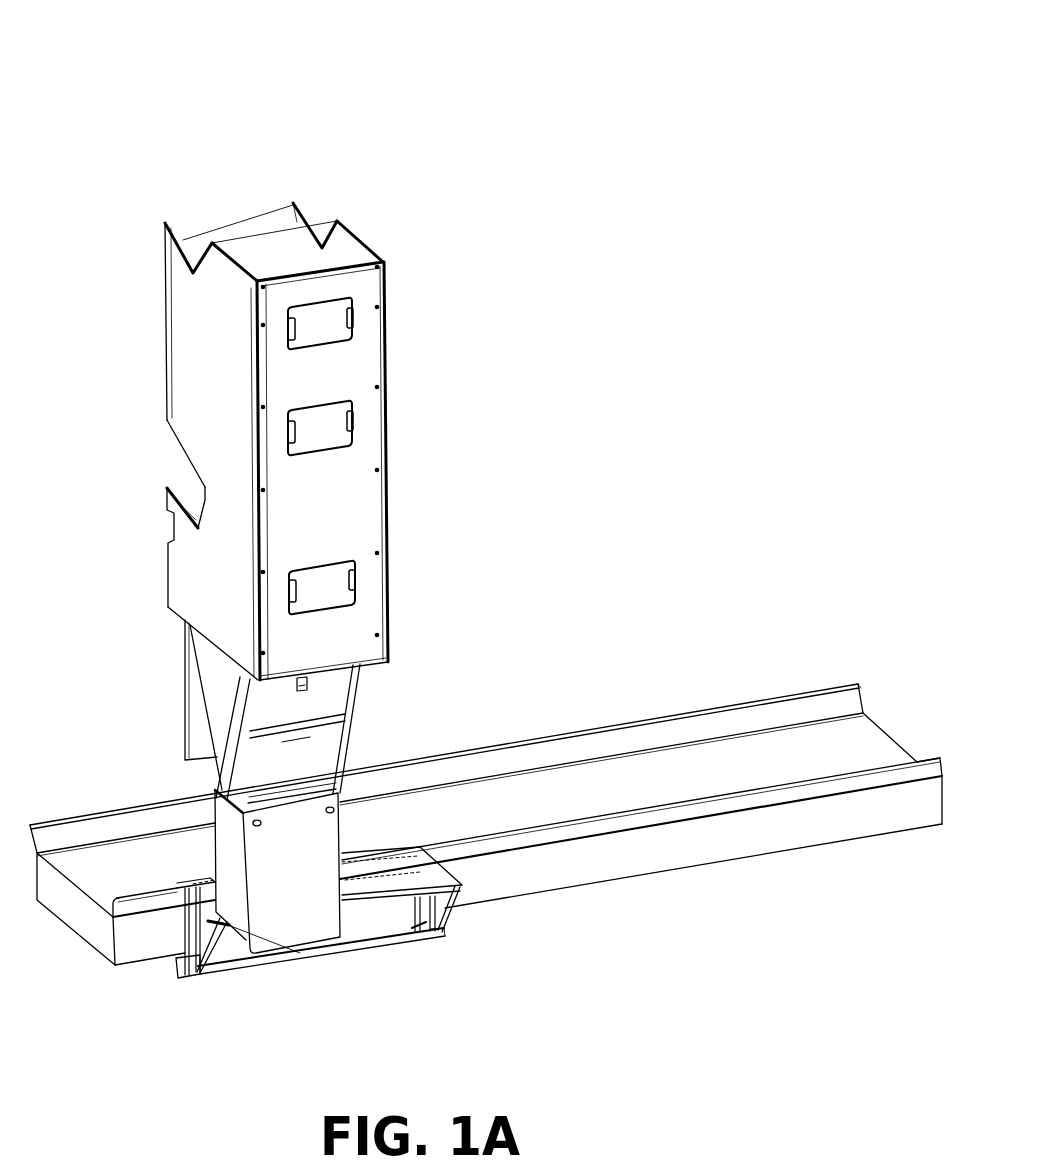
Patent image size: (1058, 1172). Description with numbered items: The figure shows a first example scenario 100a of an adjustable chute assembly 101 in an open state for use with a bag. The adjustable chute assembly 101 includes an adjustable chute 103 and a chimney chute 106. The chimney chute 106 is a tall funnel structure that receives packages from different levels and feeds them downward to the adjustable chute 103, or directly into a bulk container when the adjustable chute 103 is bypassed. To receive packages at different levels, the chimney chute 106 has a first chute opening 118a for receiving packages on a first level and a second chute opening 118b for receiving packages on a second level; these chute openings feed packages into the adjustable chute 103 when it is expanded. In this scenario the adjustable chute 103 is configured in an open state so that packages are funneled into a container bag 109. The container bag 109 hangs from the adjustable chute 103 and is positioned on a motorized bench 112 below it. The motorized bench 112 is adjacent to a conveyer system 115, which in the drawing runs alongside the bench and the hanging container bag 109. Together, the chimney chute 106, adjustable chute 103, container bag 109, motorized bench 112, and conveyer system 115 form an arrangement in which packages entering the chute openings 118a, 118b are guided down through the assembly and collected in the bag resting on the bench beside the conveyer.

The first example scenario 100a is at (568, 50).
The adjustable chute assembly 101 is at (143, 187).
The adjustable chute 103 is at (395, 705).
The chimney chute 106 is at (431, 515).
The container bag 109 is at (297, 933).
The motorized bench 112 is at (445, 932).
The conveyer system 115 is at (690, 712).
The first chute opening 118a is at (179, 458).
The second chute opening 118b is at (340, 197).